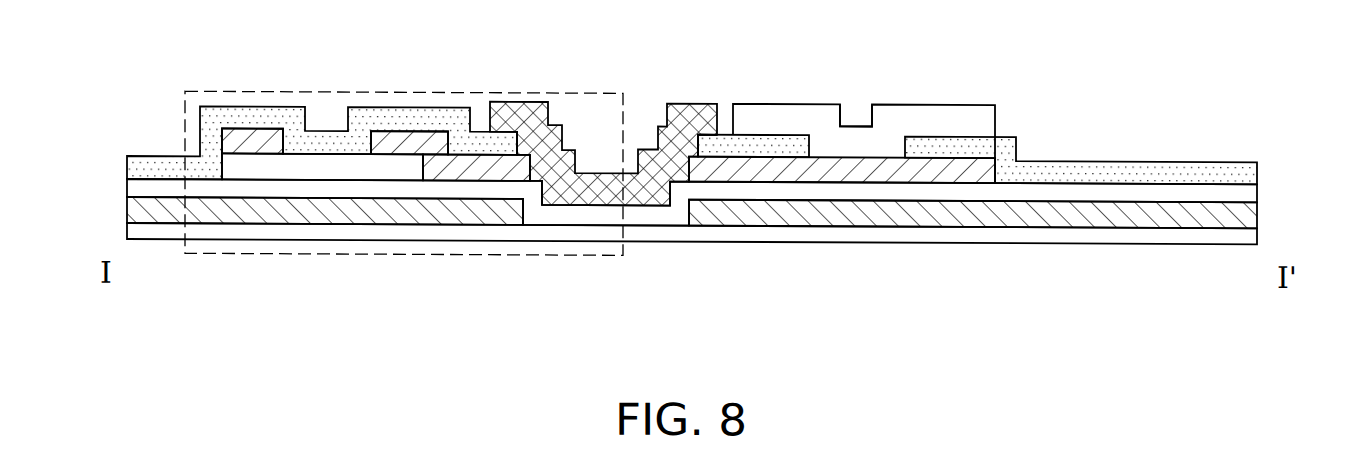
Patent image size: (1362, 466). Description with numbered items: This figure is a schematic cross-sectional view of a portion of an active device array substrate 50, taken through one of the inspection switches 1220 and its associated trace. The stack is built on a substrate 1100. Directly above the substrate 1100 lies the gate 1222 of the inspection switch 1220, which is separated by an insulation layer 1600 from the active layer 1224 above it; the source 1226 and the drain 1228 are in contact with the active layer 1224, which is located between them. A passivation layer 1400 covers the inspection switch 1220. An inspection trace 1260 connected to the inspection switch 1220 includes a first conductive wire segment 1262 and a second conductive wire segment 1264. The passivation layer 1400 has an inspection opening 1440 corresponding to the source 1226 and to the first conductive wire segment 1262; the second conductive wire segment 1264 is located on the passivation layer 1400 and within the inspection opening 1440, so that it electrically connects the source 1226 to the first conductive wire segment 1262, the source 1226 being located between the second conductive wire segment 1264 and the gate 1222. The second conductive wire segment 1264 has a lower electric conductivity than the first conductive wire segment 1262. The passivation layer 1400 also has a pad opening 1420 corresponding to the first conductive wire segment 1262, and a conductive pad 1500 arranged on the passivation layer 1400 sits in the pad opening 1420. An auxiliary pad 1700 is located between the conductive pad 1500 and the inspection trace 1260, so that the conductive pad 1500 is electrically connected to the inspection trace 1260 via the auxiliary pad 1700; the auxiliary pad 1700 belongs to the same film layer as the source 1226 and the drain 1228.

The active device array substrate 50 is at (692, 186).
The substrate 1100 is at (1250, 232).
The inspection switch 1220 is at (404, 143).
The gate 1222 is at (132, 217).
The active layer 1224 is at (330, 169).
The source 1226 is at (476, 165).
The drain 1228 is at (257, 141).
The inspection trace 1260 is at (873, 214).
The first conductive wire segment 1262 is at (778, 209).
The second conductive wire segment 1264 is at (660, 200).
The passivation layer 1400 is at (132, 163).
The pad opening 1420 is at (899, 138).
The inspection opening 1440 is at (697, 141).
The conductive pad 1500 is at (995, 116).
The insulation layer 1600 is at (1250, 191).
The auxiliary pad 1700 is at (864, 176).